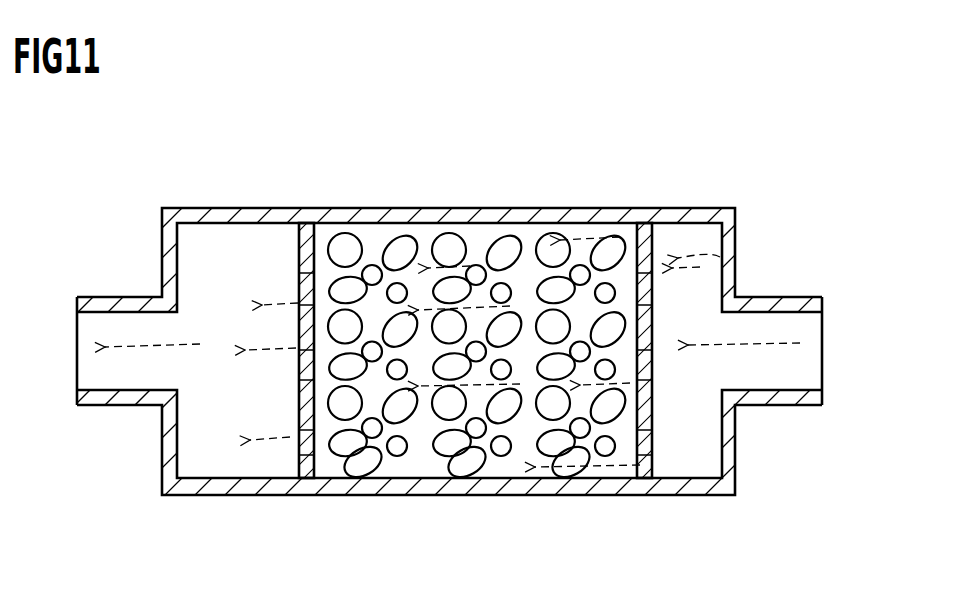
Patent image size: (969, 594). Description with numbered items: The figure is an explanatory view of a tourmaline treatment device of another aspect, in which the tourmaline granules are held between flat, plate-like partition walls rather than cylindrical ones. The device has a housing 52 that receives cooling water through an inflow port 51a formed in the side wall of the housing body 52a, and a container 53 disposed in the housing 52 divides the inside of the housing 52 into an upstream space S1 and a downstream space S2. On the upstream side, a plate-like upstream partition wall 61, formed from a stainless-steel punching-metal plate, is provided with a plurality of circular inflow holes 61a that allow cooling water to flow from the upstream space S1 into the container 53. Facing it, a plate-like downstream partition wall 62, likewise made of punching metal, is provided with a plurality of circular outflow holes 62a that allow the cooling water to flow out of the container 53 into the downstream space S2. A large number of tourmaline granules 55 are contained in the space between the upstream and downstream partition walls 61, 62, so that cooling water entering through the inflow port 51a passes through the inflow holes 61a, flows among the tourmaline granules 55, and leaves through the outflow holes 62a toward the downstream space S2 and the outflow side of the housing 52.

The housing 52 is at (450, 206).
The container 53 is at (729, 236).
The housing body 52a is at (92, 338).
The inflow port 51a is at (774, 363).
The downstream partition wall 62 is at (298, 252).
The outflow holes 62a is at (298, 372).
The upstream partition wall 61 is at (649, 238).
The inflow holes 61a is at (655, 317).
The tourmaline granules 55 is at (616, 246).
The upstream space S1 is at (688, 418).
The downstream space S2 is at (216, 268).